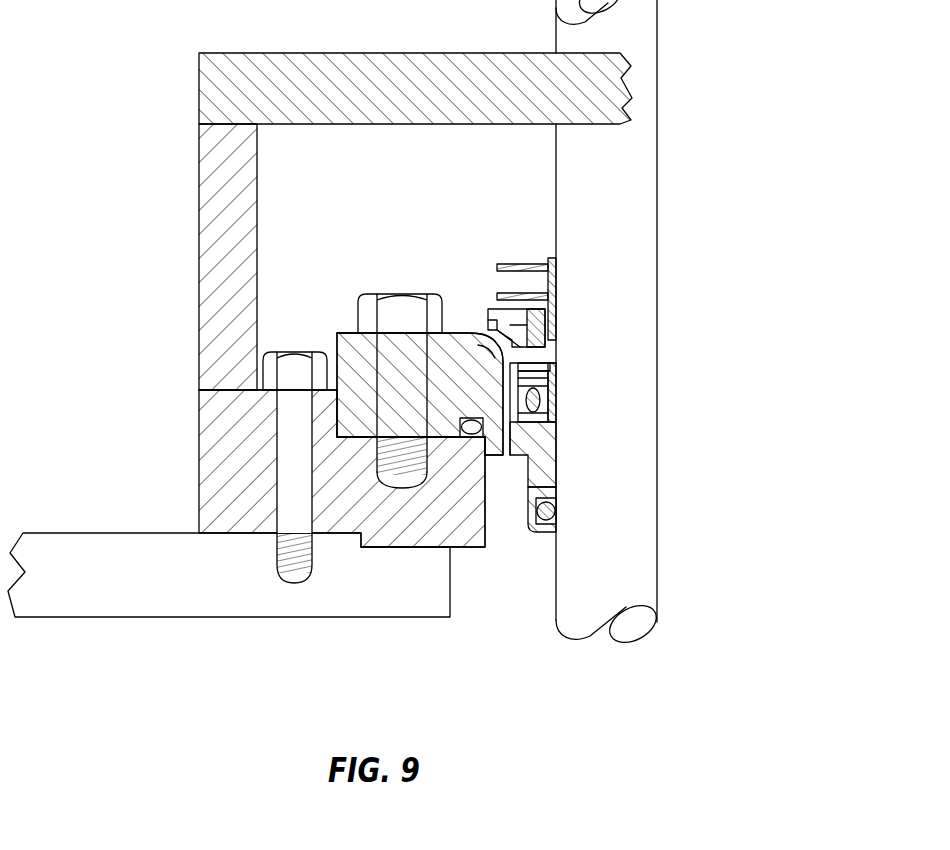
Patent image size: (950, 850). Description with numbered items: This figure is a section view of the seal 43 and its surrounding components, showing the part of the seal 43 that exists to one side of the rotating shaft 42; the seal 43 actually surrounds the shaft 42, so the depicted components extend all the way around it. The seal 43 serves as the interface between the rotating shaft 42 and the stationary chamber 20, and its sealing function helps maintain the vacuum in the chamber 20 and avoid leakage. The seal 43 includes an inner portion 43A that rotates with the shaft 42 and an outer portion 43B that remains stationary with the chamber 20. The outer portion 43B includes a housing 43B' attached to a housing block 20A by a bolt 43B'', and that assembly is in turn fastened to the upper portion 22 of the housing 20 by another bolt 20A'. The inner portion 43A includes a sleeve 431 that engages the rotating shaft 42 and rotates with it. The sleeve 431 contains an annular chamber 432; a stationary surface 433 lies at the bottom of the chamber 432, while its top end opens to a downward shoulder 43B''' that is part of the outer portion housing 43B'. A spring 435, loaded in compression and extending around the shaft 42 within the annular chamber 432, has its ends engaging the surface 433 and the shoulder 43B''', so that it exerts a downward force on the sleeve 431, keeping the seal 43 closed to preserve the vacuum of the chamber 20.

The chamber 20 is at (123, 484).
The housing block 20A is at (310, 437).
The bolt 20A' is at (216, 421).
The upper portion 22 is at (52, 533).
The rotating shaft 42 is at (657, 193).
The seal 43 is at (407, 254).
The inner portion 43A is at (524, 252).
The outer portion 43B is at (420, 343).
The housing 43B' is at (235, 269).
The bolt 43B'' is at (275, 322).
The shoulder 43B''' is at (490, 280).
The sleeve 431 is at (546, 533).
The annular chamber 432 is at (555, 384).
The stationary surface 433 is at (555, 416).
The spring 435 is at (540, 363).